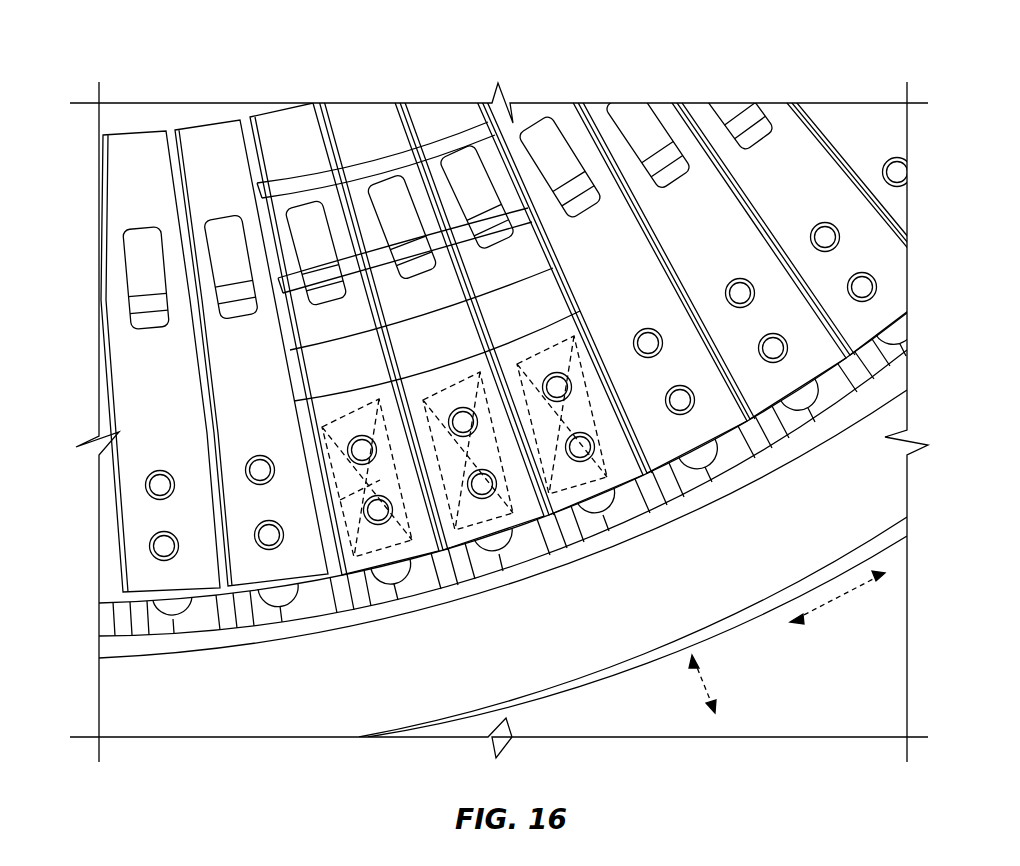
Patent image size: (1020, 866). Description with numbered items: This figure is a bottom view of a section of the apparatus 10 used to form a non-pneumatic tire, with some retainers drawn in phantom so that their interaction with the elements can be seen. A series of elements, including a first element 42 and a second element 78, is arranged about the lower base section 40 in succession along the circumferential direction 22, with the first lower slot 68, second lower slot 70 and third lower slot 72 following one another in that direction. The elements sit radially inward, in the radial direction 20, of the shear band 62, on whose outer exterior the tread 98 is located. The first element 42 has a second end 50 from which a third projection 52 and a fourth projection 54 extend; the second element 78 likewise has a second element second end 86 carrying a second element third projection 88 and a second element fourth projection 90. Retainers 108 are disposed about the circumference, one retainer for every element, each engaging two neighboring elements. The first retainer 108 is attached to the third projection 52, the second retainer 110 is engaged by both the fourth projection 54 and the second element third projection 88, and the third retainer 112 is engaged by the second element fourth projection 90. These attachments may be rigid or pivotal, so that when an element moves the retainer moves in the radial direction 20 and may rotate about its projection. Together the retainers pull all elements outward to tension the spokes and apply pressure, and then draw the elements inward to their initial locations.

The apparatus 10 is at (237, 72).
The radial direction 20 is at (713, 688).
The circumferential direction 22 is at (837, 600).
The lower base section 40 is at (115, 118).
The first element 42 is at (358, 540).
The second end 50 is at (400, 435).
The third projection 52 is at (402, 560).
The fourth projection 54 is at (460, 412).
The shear band 62 is at (887, 475).
The first lower slot 68 is at (338, 432).
The second lower slot 70 is at (482, 402).
The third lower slot 72 is at (575, 367).
The second element 78 is at (548, 520).
The second element second end 86 is at (590, 462).
The second element third projection 88 is at (497, 530).
The second element fourth projection 90 is at (572, 387).
The tread 98 is at (743, 620).
The retainer 108 is at (312, 323).
The second retainer 110 is at (422, 243).
The third retainer 112 is at (509, 226).